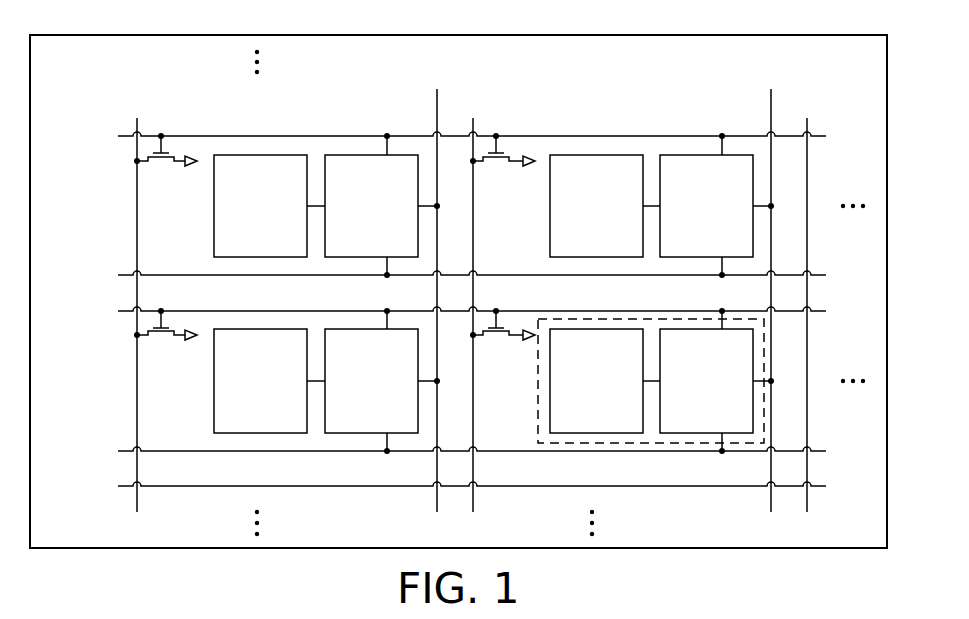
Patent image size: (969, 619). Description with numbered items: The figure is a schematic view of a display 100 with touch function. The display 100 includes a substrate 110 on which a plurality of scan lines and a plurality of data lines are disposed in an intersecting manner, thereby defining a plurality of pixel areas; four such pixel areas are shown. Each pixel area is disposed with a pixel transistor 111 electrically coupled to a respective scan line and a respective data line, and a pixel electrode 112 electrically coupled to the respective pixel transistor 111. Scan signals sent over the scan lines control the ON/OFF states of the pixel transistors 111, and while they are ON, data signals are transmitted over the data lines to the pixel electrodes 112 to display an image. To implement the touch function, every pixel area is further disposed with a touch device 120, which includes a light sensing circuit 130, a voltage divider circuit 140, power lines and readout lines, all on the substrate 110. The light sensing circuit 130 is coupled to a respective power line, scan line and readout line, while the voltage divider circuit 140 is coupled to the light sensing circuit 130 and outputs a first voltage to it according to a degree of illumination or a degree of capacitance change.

The display 100 is at (883, 593).
The substrate 110 is at (773, 548).
The pixel transistor 111 is at (161, 165).
The pixel electrode 112 is at (528, 155).
The touch device 120 is at (766, 330).
The light sensing circuit 130 is at (755, 410).
The voltage divider circuit 140 is at (548, 443).